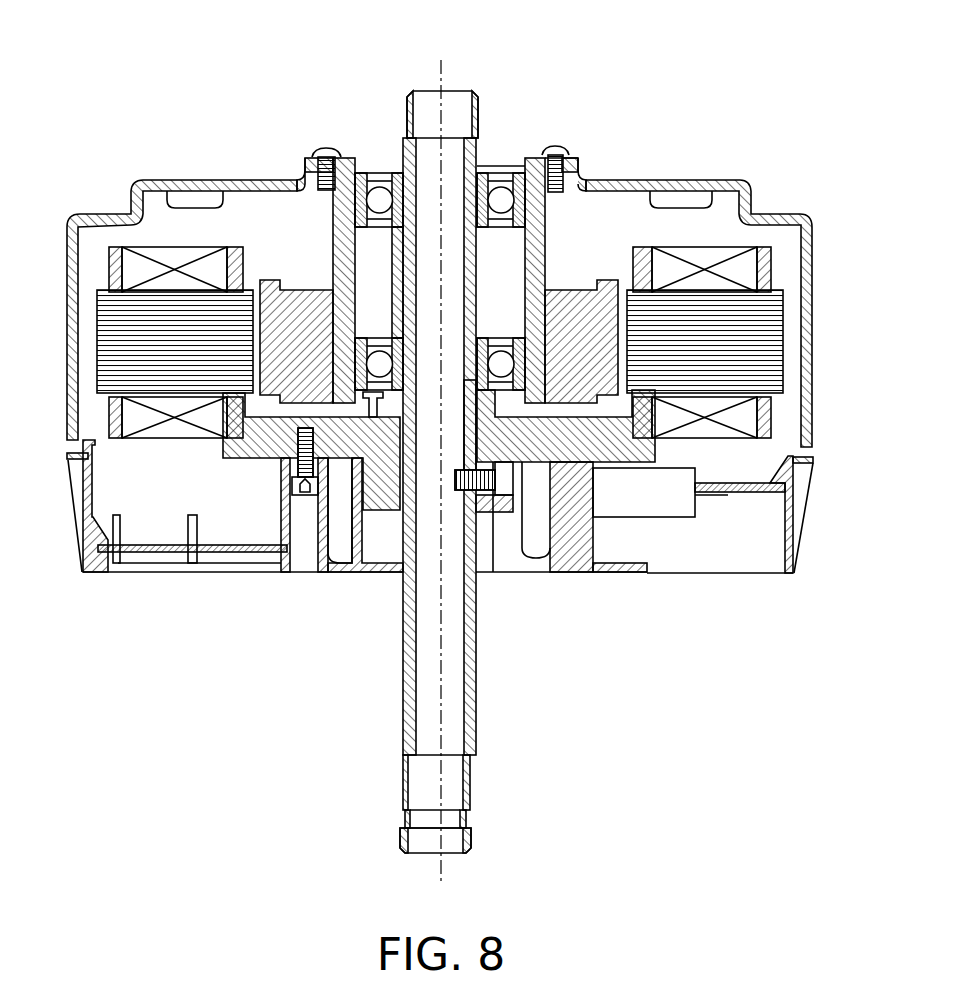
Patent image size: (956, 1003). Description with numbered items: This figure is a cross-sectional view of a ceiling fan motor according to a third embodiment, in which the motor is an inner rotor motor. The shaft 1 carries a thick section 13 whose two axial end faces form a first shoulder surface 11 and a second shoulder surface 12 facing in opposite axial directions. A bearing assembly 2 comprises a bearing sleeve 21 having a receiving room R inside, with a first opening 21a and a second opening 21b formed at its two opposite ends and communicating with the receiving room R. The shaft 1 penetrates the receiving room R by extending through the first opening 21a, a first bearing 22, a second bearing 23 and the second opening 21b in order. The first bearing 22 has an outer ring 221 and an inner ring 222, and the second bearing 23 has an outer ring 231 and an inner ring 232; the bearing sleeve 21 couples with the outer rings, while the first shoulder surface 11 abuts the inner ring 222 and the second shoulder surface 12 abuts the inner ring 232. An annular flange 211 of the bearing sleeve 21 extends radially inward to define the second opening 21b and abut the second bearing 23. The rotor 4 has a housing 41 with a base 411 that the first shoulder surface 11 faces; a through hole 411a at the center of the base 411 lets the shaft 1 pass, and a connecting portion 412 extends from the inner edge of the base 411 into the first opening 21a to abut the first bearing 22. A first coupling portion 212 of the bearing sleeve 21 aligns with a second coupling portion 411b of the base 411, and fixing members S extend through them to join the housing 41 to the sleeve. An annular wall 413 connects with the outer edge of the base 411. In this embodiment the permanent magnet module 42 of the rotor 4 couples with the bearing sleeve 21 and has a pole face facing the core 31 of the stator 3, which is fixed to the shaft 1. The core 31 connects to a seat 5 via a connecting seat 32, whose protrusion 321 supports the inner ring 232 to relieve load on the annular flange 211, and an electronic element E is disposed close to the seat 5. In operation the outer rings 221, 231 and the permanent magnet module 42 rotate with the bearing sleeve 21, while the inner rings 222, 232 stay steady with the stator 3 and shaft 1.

The shaft 1 is at (444, 430).
The first shoulder surface 11 is at (390, 173).
The second shoulder surface 12 is at (395, 388).
The thick section 13 is at (547, 262).
The bearing assembly 2 is at (449, 249).
The bearing sleeve 21 is at (488, 249).
The first opening 21a is at (358, 173).
The second opening 21b is at (370, 402).
The first bearing 22 is at (517, 173).
The outer ring of the first bearing 221 is at (488, 165).
The inner ring of the first bearing 222 is at (452, 177).
The second bearing 23 is at (512, 400).
The outer ring of the second bearing 231 is at (593, 477).
The inner ring of the second bearing 232 is at (467, 383).
The annular flange 211 is at (500, 470).
The stator 3 is at (440, 474).
The core 31 is at (173, 383).
The connecting seat 32 is at (280, 447).
The protrusion 321 is at (480, 500).
The rotor 4 is at (461, 246).
The housing 41 is at (461, 246).
The base 411 is at (195, 180).
The through hole 411a is at (487, 168).
The second coupling portion 411b is at (298, 160).
The connecting portion 412 is at (372, 158).
The annular wall 413 is at (813, 280).
The permanent magnet module 42 is at (612, 284).
The seat 5 is at (440, 562).
The electronic element E is at (673, 513).
The receiving room R is at (360, 273).
The fixing members S is at (323, 148).
The first coupling portion 212 is at (566, 176).